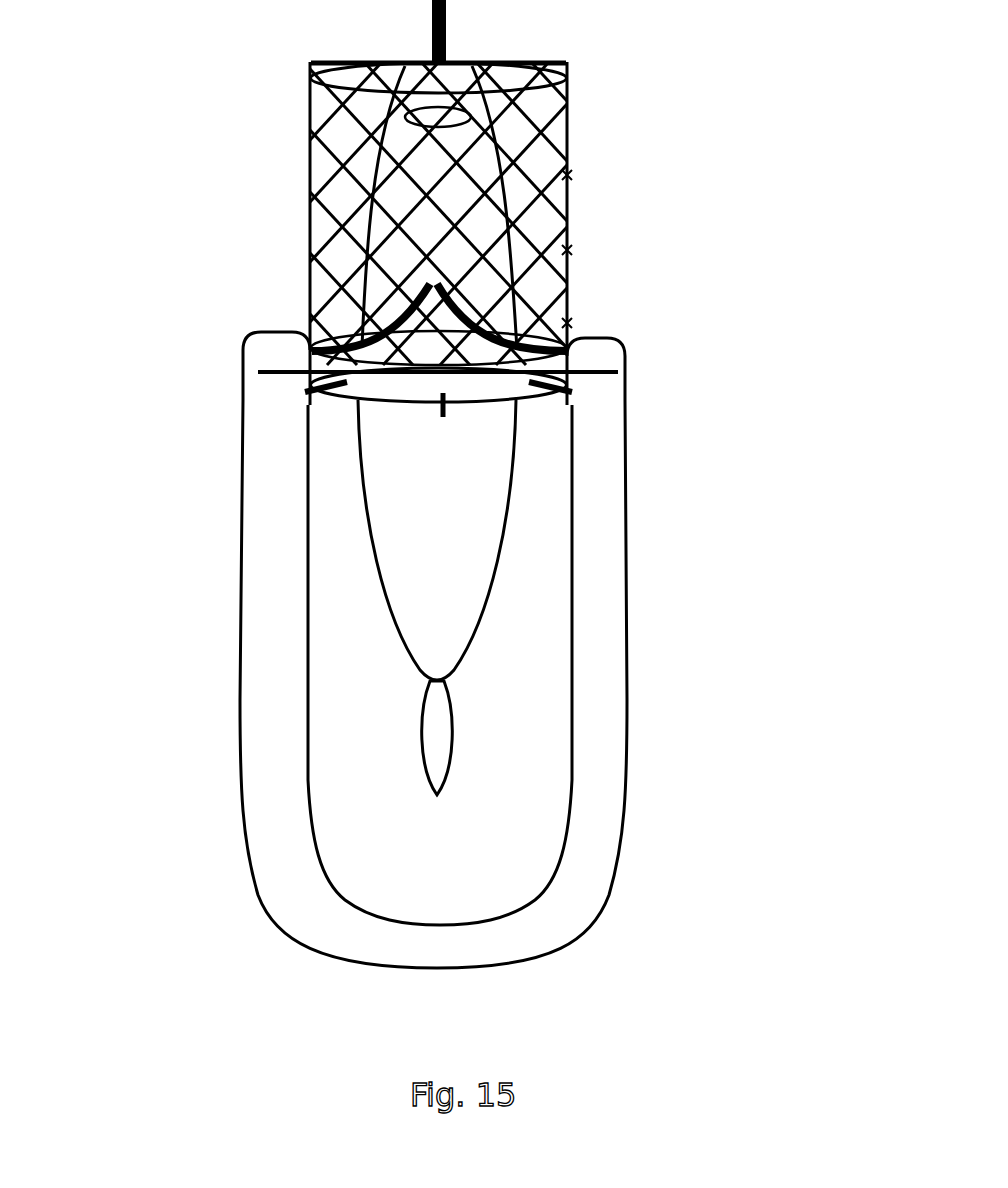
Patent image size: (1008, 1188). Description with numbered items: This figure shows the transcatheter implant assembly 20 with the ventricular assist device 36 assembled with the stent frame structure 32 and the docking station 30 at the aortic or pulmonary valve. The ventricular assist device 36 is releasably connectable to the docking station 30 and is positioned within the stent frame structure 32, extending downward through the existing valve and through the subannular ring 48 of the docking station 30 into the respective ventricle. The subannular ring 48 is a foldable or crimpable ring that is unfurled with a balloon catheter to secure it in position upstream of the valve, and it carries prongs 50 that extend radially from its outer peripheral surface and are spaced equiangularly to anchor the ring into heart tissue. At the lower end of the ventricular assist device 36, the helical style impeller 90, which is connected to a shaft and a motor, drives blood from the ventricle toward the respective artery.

The transcatheter implant assembly 20 is at (461, 484).
The stent frame structure 32 is at (523, 152).
The docking station 30 is at (305, 373).
The subannular ring 48 is at (390, 386).
The prongs 50 is at (583, 392).
The ventricular assist device 36 is at (473, 485).
The helical style impeller 90 is at (437, 740).